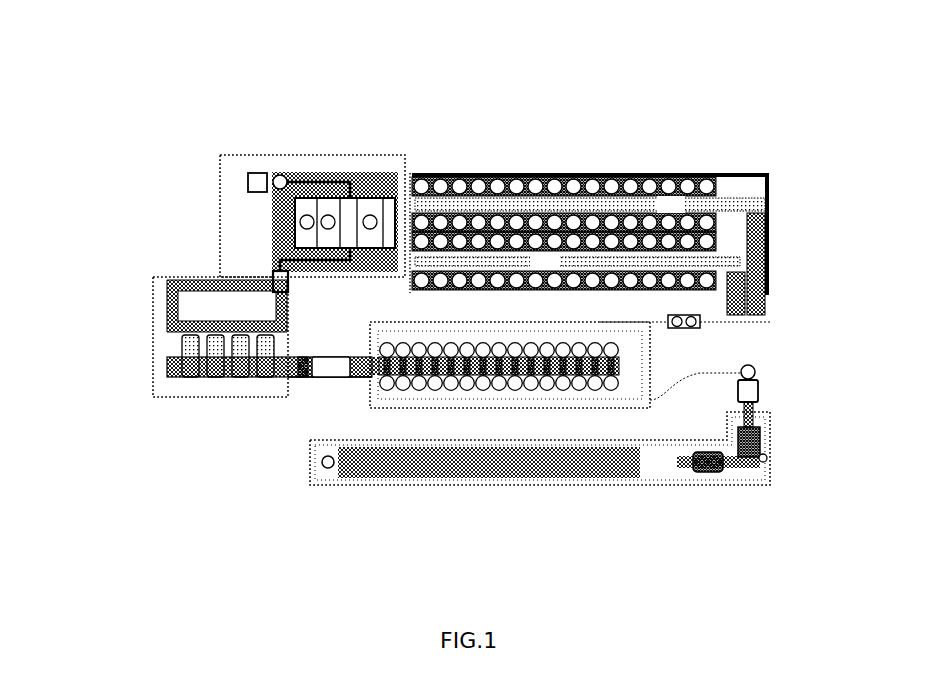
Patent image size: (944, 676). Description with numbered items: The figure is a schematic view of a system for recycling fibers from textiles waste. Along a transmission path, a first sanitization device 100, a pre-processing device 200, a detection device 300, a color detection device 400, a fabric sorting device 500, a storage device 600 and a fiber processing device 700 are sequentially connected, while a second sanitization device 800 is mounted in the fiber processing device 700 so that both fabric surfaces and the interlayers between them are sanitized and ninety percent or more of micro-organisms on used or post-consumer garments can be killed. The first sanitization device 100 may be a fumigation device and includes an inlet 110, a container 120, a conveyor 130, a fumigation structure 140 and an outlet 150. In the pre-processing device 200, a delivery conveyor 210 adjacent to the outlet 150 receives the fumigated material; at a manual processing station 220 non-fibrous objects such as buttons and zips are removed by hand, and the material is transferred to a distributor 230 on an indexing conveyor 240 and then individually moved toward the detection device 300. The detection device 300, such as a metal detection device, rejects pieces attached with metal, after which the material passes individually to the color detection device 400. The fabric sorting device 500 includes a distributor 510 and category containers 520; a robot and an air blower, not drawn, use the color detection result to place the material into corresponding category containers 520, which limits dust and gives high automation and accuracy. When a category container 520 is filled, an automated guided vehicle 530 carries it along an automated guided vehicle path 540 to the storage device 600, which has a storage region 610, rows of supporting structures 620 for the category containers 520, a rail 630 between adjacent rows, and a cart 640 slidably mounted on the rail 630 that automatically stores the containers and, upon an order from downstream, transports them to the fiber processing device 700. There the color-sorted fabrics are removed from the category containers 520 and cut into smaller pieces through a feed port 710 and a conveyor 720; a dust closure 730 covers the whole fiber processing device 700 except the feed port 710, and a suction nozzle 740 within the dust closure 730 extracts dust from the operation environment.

The first sanitization device 100 is at (222, 155).
The inlet 110 is at (258, 173).
The container 120 is at (282, 175).
The conveyor 130 is at (332, 168).
The fumigation structure 140 is at (382, 170).
The outlet 150 is at (272, 277).
The pre-processing device 200 is at (152, 314).
The delivery conveyor 210 is at (160, 305).
The manual processing station 220 is at (185, 350).
The distributor 230 is at (172, 366).
The indexing conveyor 240 is at (220, 364).
The detection device 300 is at (283, 378).
The color detection device 400 is at (313, 377).
The fabric sorting device 500 is at (372, 403).
The distributor 510 is at (366, 360).
The category containers 520 is at (393, 345).
The automated guided vehicle 530 is at (667, 317).
The automated guided vehicle path 540 is at (597, 340).
The storage device 600 is at (510, 172).
The storage region 610 is at (768, 172).
The supporting structures 620 is at (728, 172).
The rail 630 is at (765, 200).
The cart 640 is at (697, 172).
The fiber processing device 700 is at (540, 487).
The feed port 710 is at (748, 393).
The conveyor 720 is at (758, 402).
The dust closure 730 is at (770, 445).
The suction nozzle 740 is at (766, 460).
The second sanitization device 800 is at (713, 487).